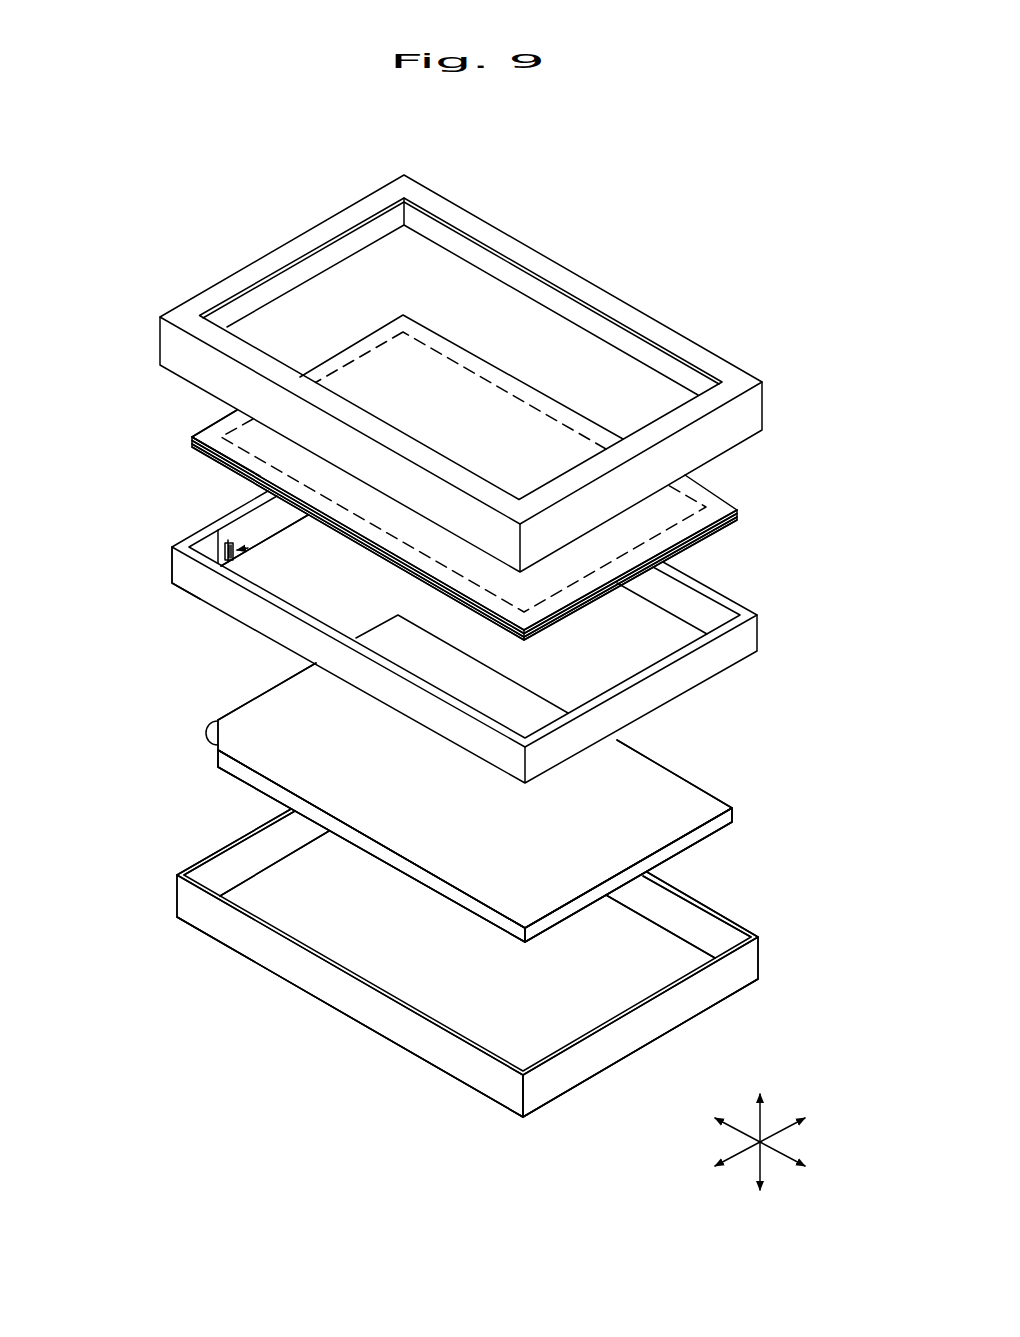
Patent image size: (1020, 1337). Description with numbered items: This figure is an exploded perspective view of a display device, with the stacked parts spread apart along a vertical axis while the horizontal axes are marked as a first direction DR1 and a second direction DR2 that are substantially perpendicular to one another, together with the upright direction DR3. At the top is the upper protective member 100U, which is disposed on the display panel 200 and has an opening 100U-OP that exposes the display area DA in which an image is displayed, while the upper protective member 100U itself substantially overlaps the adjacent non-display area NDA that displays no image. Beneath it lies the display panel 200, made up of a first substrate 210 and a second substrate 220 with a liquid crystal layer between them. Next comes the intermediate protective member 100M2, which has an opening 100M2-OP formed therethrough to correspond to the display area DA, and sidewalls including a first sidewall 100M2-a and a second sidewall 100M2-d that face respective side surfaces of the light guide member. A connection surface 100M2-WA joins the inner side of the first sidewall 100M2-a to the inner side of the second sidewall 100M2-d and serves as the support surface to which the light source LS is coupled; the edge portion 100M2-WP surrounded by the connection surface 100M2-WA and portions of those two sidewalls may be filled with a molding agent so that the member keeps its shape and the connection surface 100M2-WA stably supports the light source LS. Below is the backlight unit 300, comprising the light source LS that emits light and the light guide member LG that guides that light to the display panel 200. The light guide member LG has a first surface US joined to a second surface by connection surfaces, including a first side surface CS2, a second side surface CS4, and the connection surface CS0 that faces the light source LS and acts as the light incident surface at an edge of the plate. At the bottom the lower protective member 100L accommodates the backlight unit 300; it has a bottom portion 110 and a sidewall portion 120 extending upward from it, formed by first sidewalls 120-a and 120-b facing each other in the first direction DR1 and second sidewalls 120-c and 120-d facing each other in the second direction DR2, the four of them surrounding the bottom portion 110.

The upper protective member 100U is at (753, 411).
The opening 100U-OP is at (529, 331).
The display panel 200 is at (846, 471).
The second substrate 220 is at (737, 503).
The first substrate 210 is at (737, 516).
The display area DA is at (248, 433).
The non-display area NDA is at (216, 438).
The intermediate protective member 100M2 is at (755, 634).
The opening 100M2-OP is at (668, 631).
The first sidewall 100M2-a is at (216, 529).
The edge portion 100M2-WP is at (222, 548).
The second sidewall 100M2-d is at (193, 566).
The connection surface 100M2-WA is at (238, 563).
The backlight unit 300 is at (241, 691).
The light source LS is at (240, 551).
The light guide member LG is at (176, 702).
The connection surface CS0 is at (220, 721).
The first surface US is at (702, 805).
The first side surface CS2 is at (697, 835).
The second side surface CS4 is at (431, 875).
The lower protective member 100L is at (300, 1037).
The bottom portion 110 is at (440, 985).
The sidewall portion 120 is at (322, 990).
The first sidewall 120-a is at (245, 880).
The first sidewall 120-b is at (709, 996).
The second sidewall 120-c is at (728, 923).
The second sidewall 120-d is at (266, 947).
The first direction DR1 is at (779, 1153).
The second direction DR2 is at (780, 1130).
The third direction DR3 is at (760, 1128).